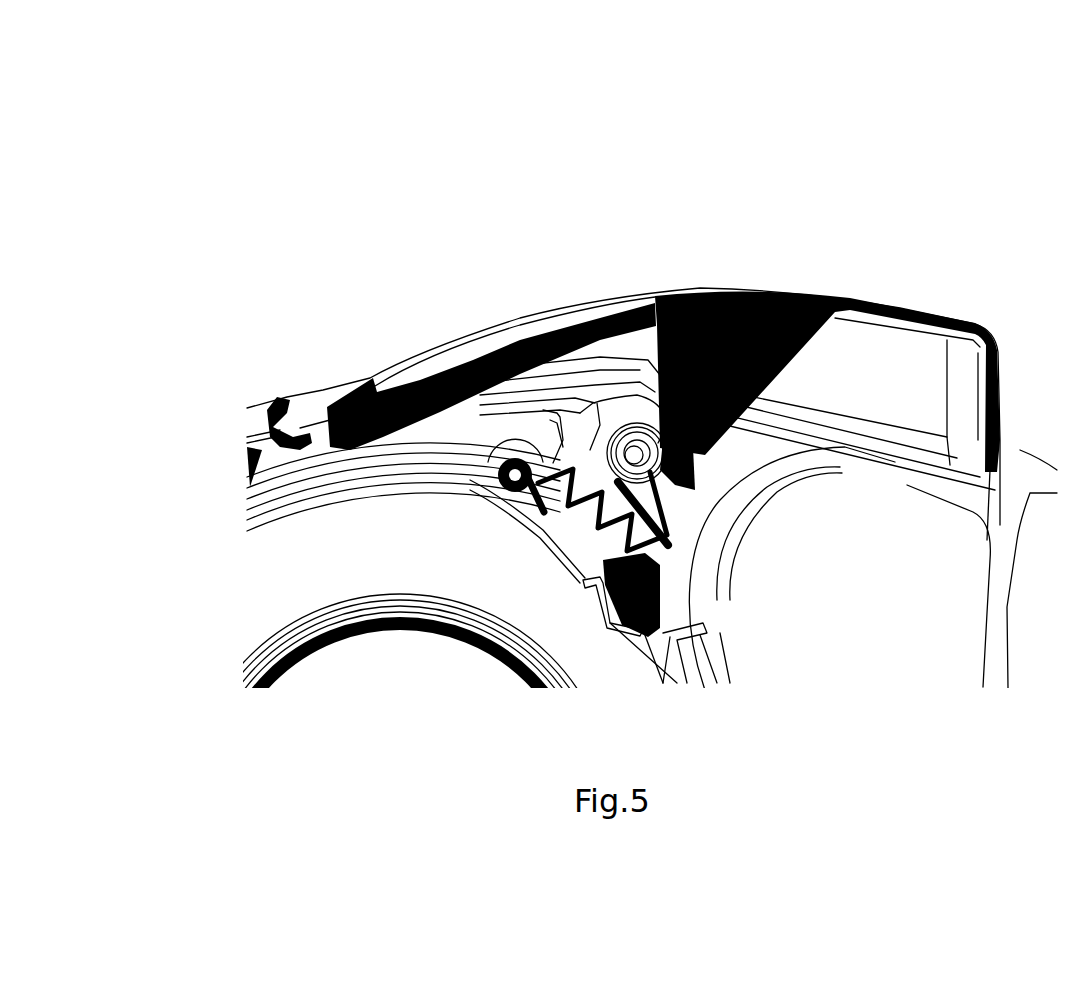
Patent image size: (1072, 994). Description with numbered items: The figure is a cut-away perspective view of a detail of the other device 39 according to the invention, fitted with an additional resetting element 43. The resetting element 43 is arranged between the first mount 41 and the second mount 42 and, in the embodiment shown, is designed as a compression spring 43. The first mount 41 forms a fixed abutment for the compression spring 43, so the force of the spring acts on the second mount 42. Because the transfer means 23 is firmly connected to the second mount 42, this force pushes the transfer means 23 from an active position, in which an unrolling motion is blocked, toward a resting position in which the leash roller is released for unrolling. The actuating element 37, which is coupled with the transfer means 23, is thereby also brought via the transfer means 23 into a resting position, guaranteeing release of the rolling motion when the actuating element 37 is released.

The transfer means 23 is at (592, 435).
The actuating element 37 is at (828, 272).
The other device 39 is at (430, 318).
The first mount 41 is at (538, 450).
The second mount 42 is at (657, 563).
The resetting element 43 is at (552, 530).